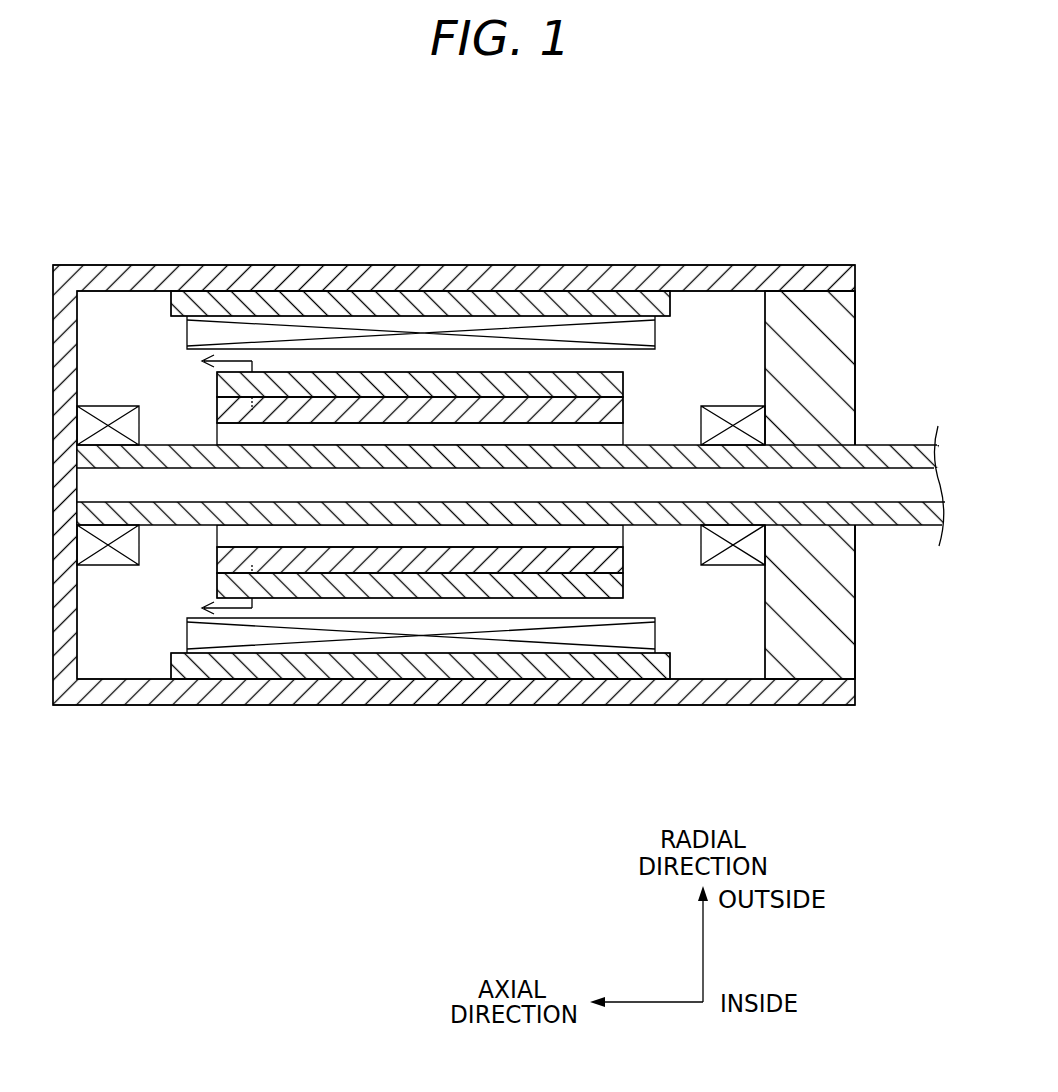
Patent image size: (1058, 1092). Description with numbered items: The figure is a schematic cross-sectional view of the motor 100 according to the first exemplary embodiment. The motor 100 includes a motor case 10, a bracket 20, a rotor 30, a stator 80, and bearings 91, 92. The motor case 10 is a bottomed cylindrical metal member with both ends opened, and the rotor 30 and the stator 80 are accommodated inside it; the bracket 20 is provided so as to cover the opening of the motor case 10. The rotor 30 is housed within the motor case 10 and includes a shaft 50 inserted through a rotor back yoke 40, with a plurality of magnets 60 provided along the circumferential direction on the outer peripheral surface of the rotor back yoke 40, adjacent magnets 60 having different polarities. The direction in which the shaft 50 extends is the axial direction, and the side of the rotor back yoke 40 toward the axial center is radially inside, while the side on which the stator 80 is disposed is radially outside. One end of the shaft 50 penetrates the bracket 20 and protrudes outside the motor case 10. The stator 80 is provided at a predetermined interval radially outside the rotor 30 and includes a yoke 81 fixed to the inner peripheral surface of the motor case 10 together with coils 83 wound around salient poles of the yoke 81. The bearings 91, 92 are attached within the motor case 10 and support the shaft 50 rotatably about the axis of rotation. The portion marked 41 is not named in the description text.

The motor 100 is at (712, 216).
The motor case 10 is at (130, 278).
The bracket 20 is at (838, 332).
The rotor 30 is at (515, 188).
The rotor back yoke 40 is at (385, 410).
The rotor core end portion 41 is at (617, 443).
The shaft 50 is at (450, 455).
The magnets 60 is at (320, 387).
The stator 80 is at (375, 758).
The yoke 81 is at (376, 670).
The coils 83 is at (440, 647).
The bearing 91 is at (733, 413).
The bearing 92 is at (103, 413).